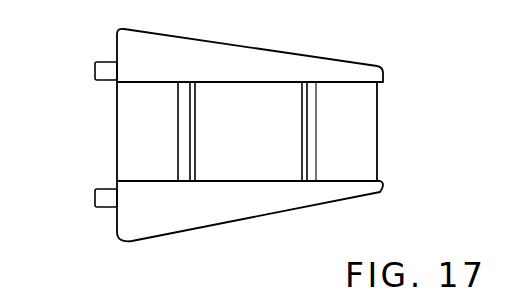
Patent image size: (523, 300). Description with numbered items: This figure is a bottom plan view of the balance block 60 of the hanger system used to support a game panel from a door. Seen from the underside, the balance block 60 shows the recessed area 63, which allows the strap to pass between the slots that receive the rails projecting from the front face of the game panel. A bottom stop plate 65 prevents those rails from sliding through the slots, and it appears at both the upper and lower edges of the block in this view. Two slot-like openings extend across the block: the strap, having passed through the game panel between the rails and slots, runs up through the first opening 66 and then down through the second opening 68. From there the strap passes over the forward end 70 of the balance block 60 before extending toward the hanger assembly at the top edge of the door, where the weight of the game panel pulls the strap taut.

The balance block 60 is at (212, 32).
The recessed area 63 is at (132, 132).
The bottom stop plate 65 is at (97, 72).
The first opening 66 is at (187, 122).
The second opening 68 is at (310, 135).
The forward end 70 is at (378, 128).